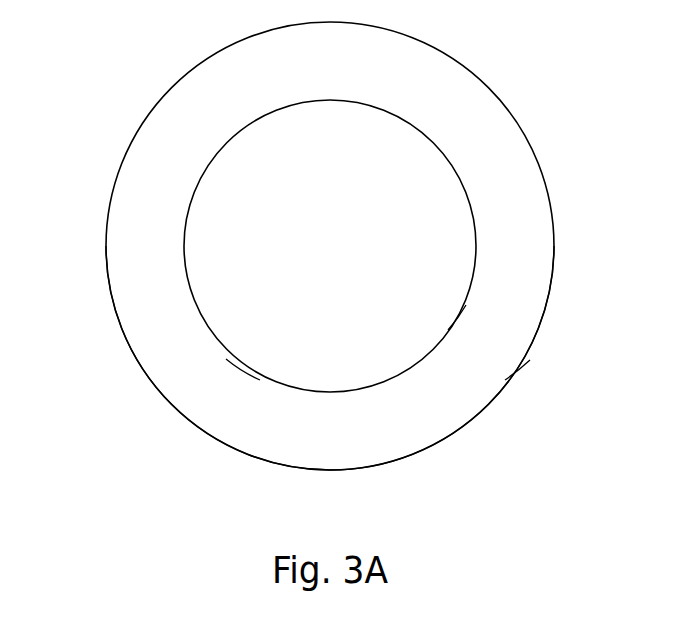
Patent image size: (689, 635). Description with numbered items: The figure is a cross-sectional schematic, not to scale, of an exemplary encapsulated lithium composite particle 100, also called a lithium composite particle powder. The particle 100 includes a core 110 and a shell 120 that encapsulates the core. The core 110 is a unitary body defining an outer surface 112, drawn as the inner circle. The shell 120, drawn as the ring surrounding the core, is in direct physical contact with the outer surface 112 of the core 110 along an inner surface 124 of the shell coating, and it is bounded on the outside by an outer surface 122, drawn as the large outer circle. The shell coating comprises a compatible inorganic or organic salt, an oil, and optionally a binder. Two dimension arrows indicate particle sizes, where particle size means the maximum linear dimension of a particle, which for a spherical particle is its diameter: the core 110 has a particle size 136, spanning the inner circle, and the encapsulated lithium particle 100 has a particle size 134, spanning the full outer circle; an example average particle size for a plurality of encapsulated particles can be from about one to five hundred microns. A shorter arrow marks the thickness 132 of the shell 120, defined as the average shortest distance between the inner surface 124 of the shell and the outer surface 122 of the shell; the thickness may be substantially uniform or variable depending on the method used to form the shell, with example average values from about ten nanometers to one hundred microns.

The encapsulated lithium composite particle 100 is at (578, 148).
The core 110 is at (349, 163).
The outer surface of the core 112 is at (248, 370).
The shell 120 is at (349, 449).
The outer surface of the shell 122 is at (518, 370).
The inner surface of the shell 124 is at (458, 320).
The shell thickness 132 is at (184, 247).
The particle size of the encapsulated lithium particle 134 is at (90, 22).
The particle size of the core 136 is at (476, 247).